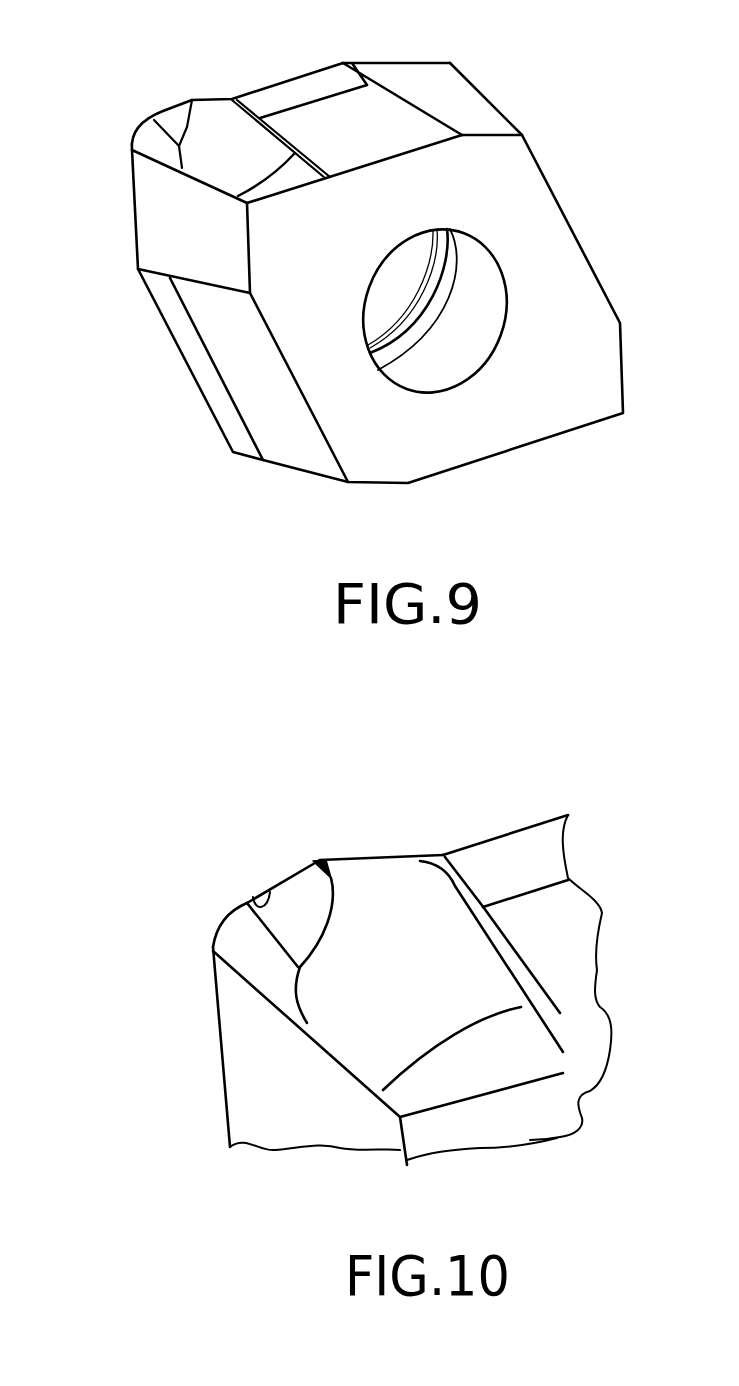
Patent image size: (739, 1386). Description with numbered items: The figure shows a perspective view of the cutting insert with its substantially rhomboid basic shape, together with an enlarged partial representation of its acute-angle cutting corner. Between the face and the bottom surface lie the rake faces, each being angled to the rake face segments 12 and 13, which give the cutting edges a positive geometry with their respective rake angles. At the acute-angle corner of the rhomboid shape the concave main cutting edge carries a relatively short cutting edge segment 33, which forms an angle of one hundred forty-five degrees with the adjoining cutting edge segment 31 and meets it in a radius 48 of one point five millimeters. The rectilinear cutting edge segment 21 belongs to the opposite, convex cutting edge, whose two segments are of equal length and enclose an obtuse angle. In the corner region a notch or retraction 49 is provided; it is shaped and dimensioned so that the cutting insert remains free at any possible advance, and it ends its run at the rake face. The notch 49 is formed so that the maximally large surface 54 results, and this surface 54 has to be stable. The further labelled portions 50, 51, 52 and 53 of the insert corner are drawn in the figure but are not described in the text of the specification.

In FIG. 9, the rake face segment 12 is at (190, 348).
In FIG. 9, the rake face segment 13 is at (247, 380).
In FIG. 10, the cutting edge segment 21 is at (217, 1032).
In FIG. 10, the cutting edge segment 31 is at (385, 850).
In FIG. 10, the cutting edge segment 33 is at (287, 875).
In FIG. 10, the radius 48 is at (323, 860).
In FIG. 10, the notch 49 is at (262, 893).
In FIG. 9, the end face 50 is at (193, 217).
In FIG. 9, the chamfer land 51 is at (307, 93).
In FIG. 9, the rake face 52 is at (370, 132).
In FIG. 9, the corner chamfer face 53 is at (460, 97).
In FIG. 9, the surface 54 is at (227, 143).